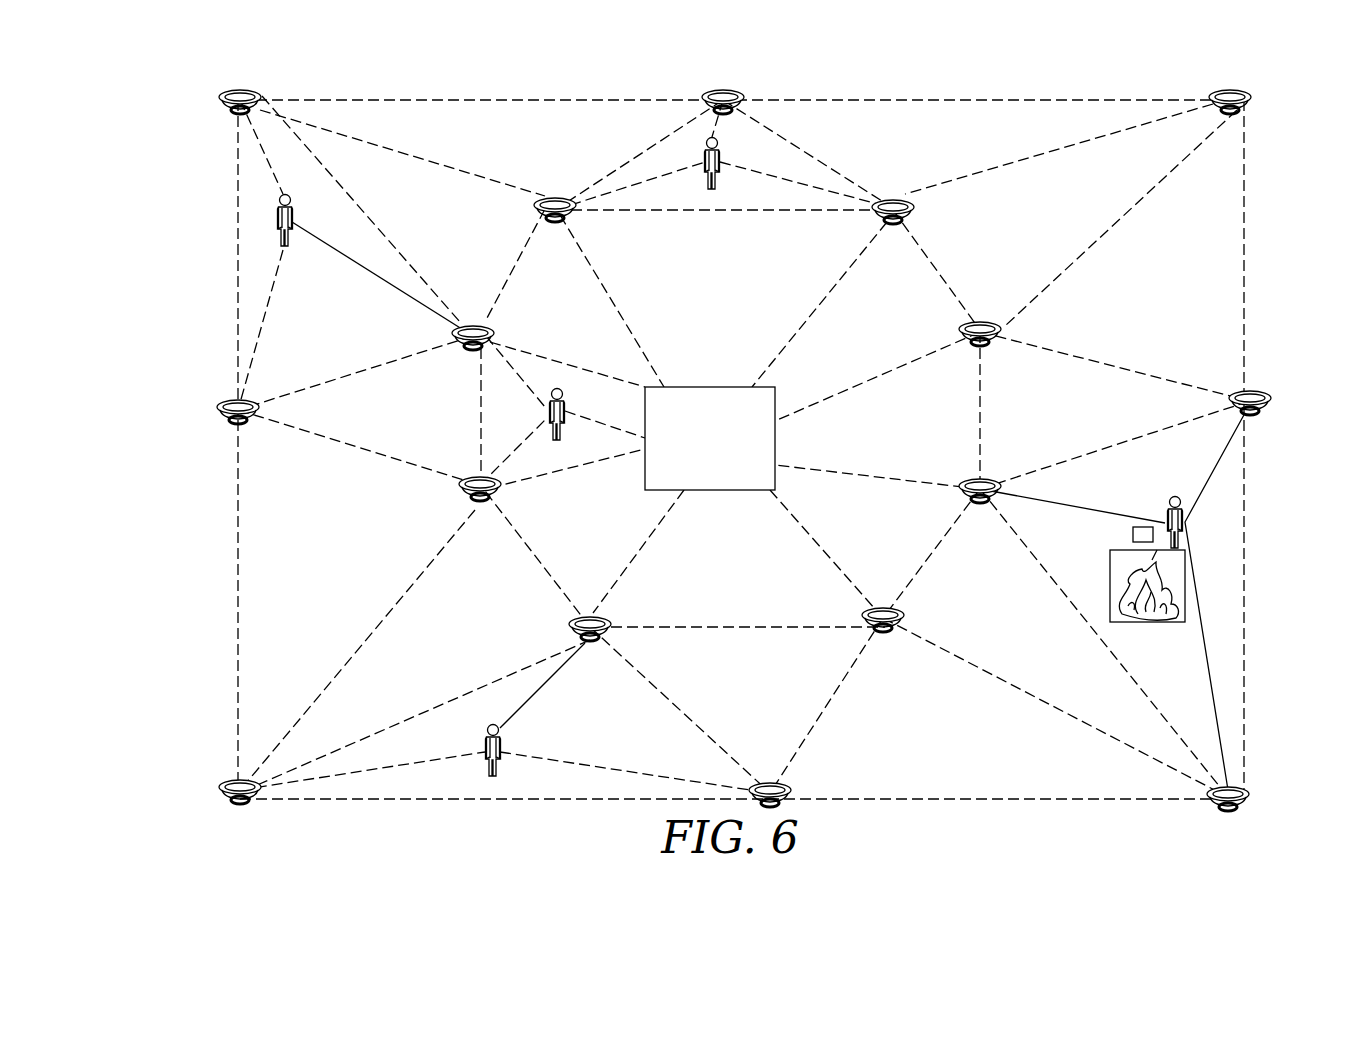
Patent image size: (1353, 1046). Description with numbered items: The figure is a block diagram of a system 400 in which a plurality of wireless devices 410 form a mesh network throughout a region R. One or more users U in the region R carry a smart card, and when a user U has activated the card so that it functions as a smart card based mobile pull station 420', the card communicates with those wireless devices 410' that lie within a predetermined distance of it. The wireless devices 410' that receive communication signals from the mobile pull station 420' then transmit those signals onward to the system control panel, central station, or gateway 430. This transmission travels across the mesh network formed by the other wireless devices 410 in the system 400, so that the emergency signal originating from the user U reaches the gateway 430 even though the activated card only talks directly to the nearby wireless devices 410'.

The system 400 is at (723, 437).
The wireless devices 410 is at (736, 435).
The wireless devices 410' is at (1120, 587).
The smart card based mobile pull station 420' is at (1124, 571).
The gateway 430 is at (710, 387).
The user U is at (291, 211).
The region R is at (1315, 733).